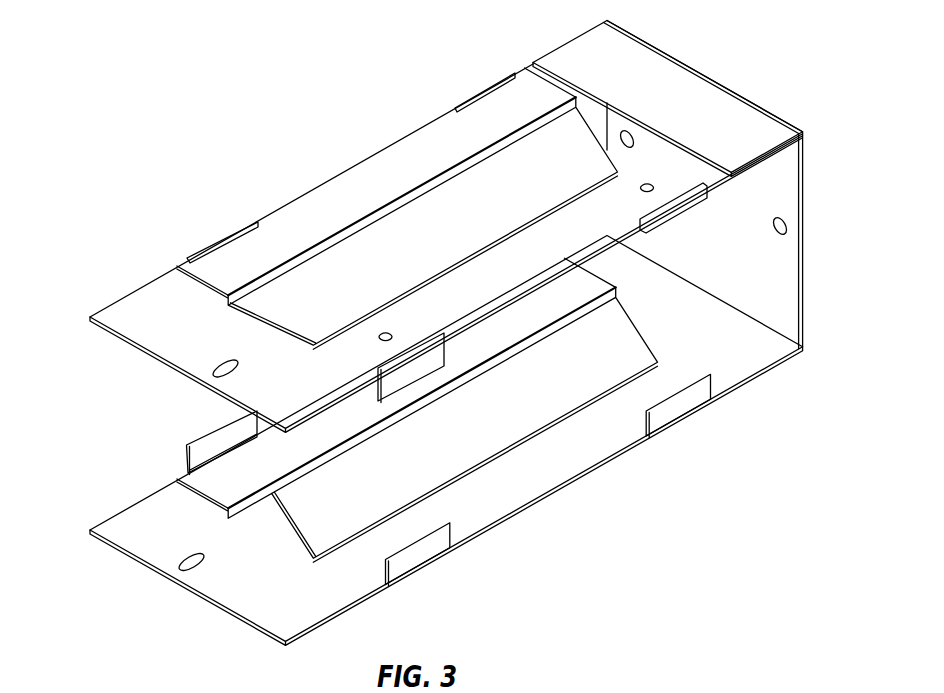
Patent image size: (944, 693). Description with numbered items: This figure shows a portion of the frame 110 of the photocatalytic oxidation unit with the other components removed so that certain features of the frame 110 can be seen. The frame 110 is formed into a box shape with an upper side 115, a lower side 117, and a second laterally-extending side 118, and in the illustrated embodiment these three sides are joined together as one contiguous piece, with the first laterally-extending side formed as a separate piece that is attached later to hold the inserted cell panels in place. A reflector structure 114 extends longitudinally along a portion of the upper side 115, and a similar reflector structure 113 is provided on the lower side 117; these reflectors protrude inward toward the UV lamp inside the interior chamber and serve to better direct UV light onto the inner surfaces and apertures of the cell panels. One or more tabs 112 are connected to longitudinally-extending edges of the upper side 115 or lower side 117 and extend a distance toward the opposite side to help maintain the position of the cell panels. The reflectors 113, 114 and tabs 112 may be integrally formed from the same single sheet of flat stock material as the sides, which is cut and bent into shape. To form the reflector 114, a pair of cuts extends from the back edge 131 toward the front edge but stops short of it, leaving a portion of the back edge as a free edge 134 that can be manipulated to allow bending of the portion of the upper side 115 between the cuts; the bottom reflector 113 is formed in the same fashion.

The frame 110 is at (459, 325).
The tabs 112 is at (675, 410).
The reflector structure 113 is at (497, 425).
The reflector structure 114 is at (461, 197).
The upper side 115 is at (147, 303).
The lower side 117 is at (733, 353).
The second laterally-extending side 118 is at (782, 295).
The back edge 131 is at (555, 47).
The free edge 134 is at (288, 200).